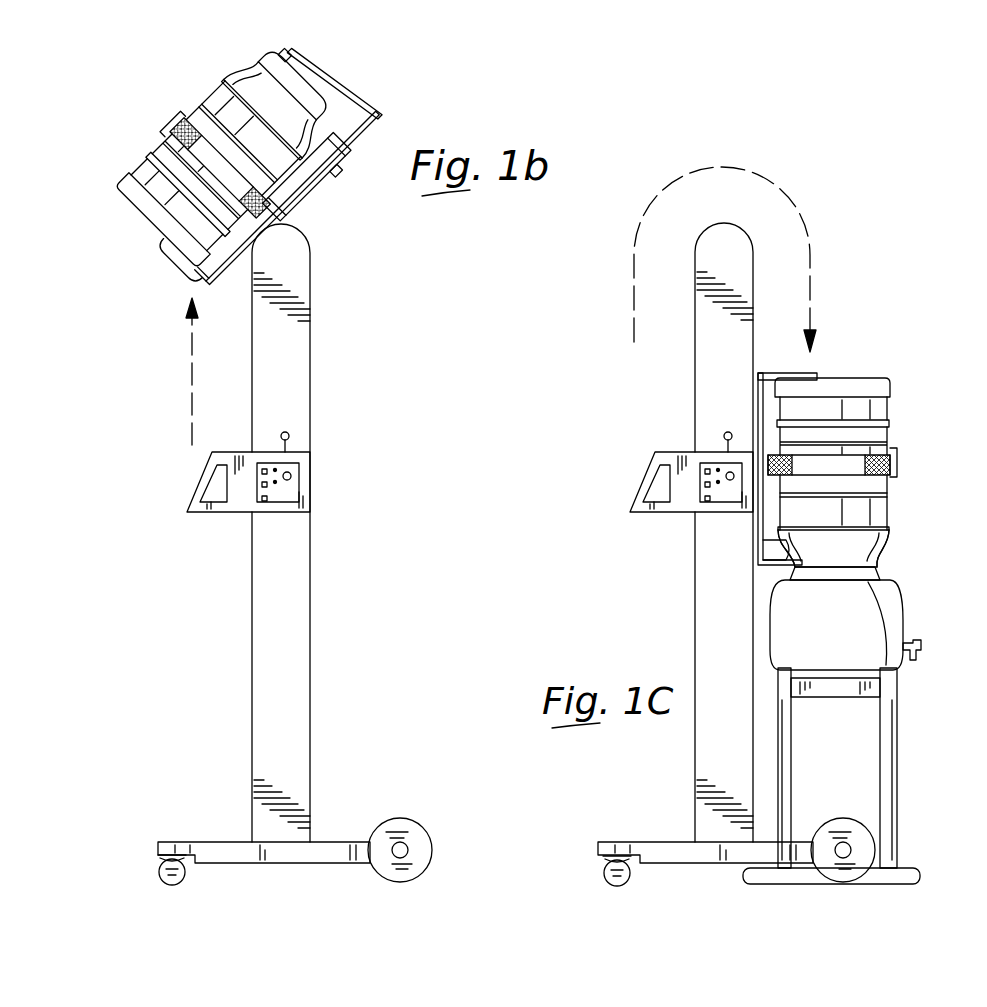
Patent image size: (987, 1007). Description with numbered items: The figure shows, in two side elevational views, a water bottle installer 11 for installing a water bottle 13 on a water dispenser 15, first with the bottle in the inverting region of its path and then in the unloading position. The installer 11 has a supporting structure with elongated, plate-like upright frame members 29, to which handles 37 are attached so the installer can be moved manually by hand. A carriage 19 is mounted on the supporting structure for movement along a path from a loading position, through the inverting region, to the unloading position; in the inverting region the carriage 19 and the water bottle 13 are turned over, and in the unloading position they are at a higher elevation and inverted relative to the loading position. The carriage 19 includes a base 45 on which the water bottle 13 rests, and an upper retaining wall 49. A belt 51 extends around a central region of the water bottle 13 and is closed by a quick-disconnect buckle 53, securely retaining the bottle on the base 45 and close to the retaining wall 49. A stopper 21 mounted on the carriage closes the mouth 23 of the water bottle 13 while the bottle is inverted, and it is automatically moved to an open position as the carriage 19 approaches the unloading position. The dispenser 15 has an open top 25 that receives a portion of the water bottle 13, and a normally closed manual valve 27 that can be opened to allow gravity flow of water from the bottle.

In FIG. 1C, the water bottle installer 11 is at (668, 390).
In FIG. 1B, the water bottle 13 is at (212, 108).
In FIG. 1C, the water bottle 13 is at (880, 407).
In FIG. 1C, the water dispenser 15 is at (875, 612).
In FIG. 1B, the carriage 19 is at (186, 274).
In FIG. 1C, the carriage 19 is at (778, 366).
In FIG. 1B, the stopper 21 is at (300, 48).
In FIG. 1B, the mouth 23 is at (293, 48).
In FIG. 1C, the open top 25 is at (860, 560).
In FIG. 1C, the manual valve 27 is at (920, 648).
In FIG. 1B, the upright frame member 29 is at (297, 640).
In FIG. 1B, the handle 37 is at (205, 483).
In FIG. 1B, the base 45 is at (160, 250).
In FIG. 1C, the base 45 is at (815, 375).
In FIG. 1B, the retaining wall 49 is at (333, 128).
In FIG. 1C, the retaining wall 49 is at (765, 548).
In FIG. 1B, the belt 51 is at (170, 132).
In FIG. 1C, the belt 51 is at (885, 455).
In FIG. 1C, the buckle 53 is at (898, 462).